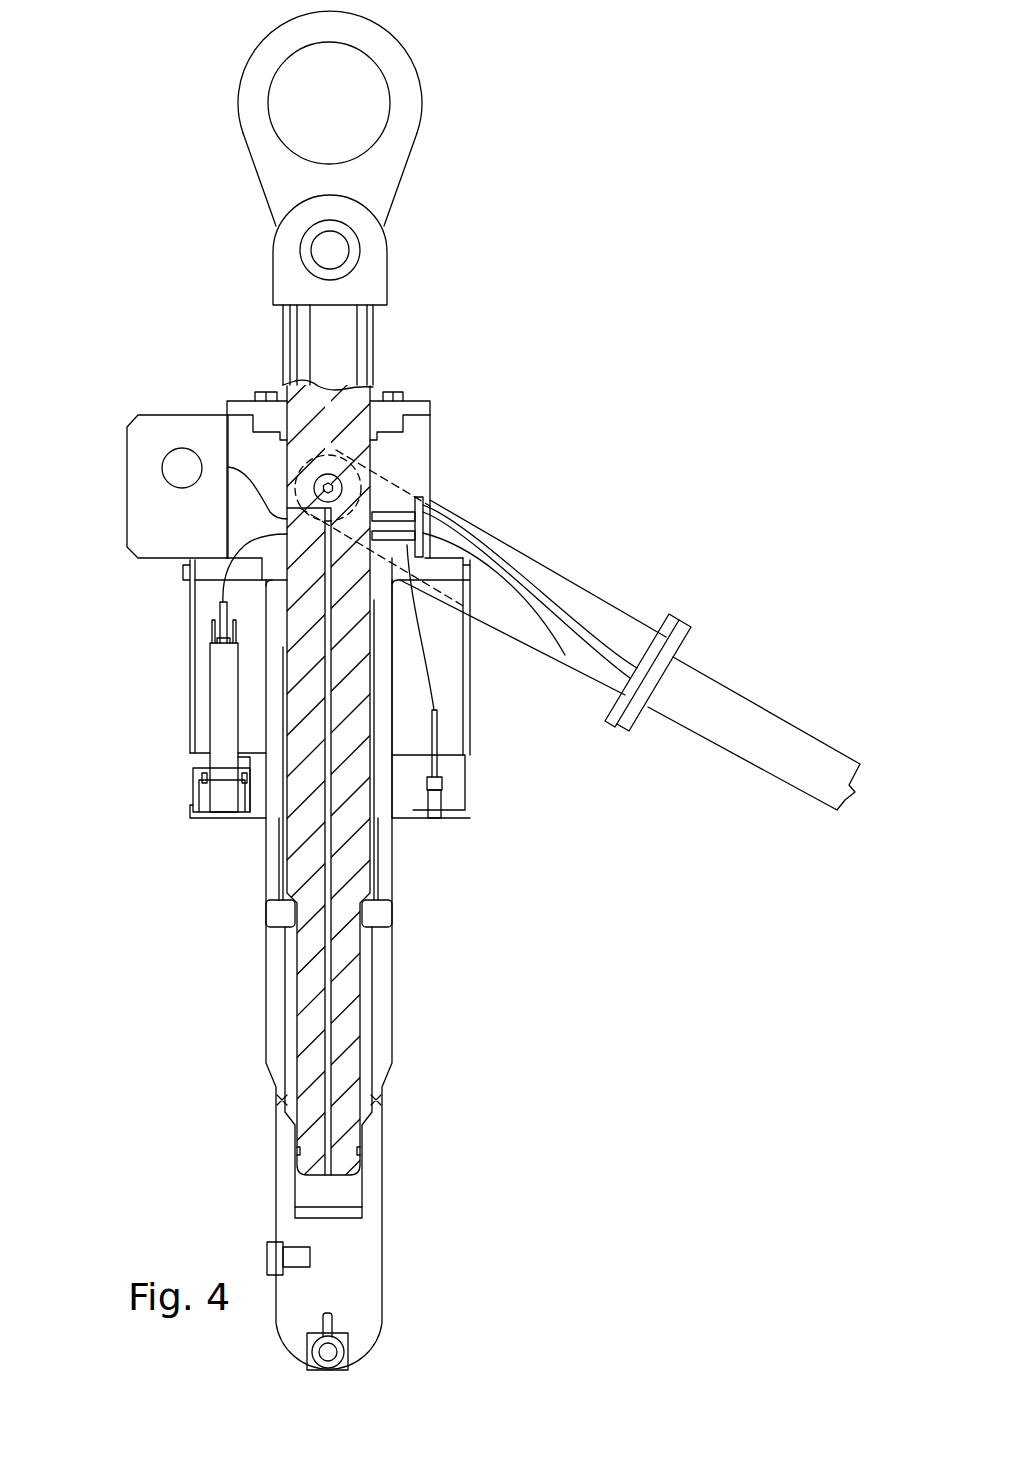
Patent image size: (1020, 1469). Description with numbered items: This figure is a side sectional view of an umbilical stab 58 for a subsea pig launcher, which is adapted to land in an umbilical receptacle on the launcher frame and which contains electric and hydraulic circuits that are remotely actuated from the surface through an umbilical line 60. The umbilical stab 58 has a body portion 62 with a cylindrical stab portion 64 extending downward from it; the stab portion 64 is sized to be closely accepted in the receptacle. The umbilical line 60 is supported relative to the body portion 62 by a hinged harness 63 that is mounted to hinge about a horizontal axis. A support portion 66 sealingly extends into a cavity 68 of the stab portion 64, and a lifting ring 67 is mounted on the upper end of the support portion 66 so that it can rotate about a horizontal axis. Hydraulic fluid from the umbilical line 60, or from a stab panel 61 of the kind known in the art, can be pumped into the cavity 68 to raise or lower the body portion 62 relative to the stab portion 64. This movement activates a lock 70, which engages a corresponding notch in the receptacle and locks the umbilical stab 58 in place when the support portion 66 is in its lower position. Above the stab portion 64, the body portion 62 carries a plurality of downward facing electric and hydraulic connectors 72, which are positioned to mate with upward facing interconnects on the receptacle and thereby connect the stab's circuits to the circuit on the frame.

The umbilical stab 58 is at (456, 424).
The umbilical line 60 is at (750, 697).
The stab panel 61 is at (141, 501).
The body portion 62 is at (466, 754).
The hinged harness 63 is at (580, 603).
The stab portion 64 is at (383, 1000).
The support portion 66 is at (360, 328).
The lifting ring 67 is at (403, 96).
The cavity 68 is at (348, 1195).
The lock 70 is at (385, 914).
The electric and hydraulic connectors 72 is at (220, 693).